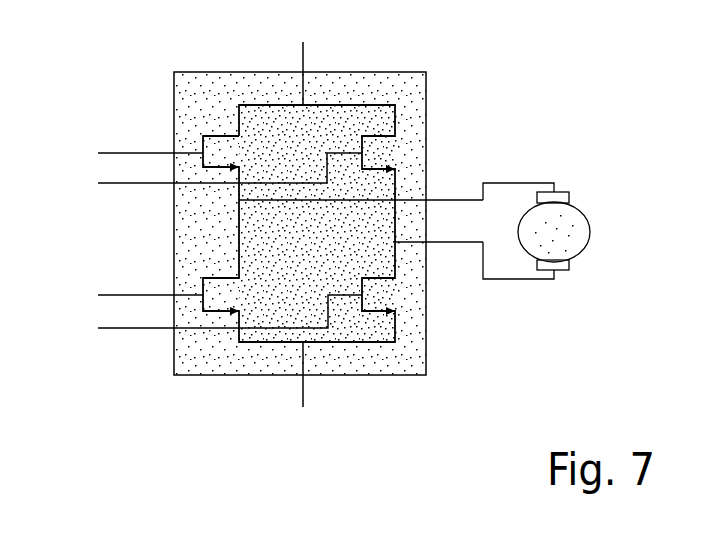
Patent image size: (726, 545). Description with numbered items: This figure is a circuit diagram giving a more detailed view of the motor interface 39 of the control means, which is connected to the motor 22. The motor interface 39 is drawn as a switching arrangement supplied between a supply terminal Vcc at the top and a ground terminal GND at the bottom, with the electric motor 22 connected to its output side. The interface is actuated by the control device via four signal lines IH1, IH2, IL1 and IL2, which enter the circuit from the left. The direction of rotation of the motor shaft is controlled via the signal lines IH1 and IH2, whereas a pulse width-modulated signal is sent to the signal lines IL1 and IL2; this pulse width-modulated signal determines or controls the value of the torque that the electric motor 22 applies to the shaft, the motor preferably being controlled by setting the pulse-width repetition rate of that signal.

The motor 22 is at (572, 242).
The motor interface 39 is at (427, 333).
The signal line IH1 is at (129, 158).
The signal line IH2 is at (209, 173).
The signal line IL1 is at (129, 298).
The signal line IL2 is at (209, 315).
The supply voltage terminal Vcc is at (304, 62).
The ground terminal GND is at (303, 386).